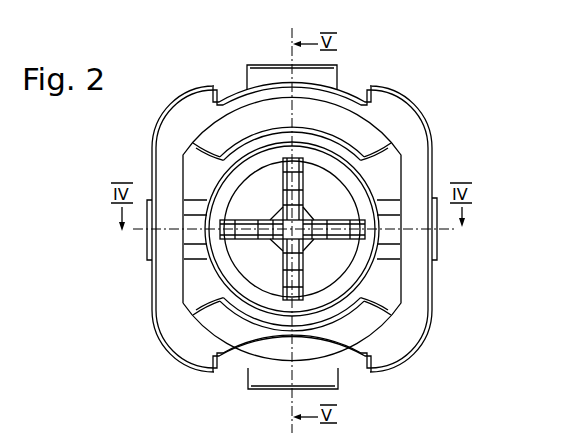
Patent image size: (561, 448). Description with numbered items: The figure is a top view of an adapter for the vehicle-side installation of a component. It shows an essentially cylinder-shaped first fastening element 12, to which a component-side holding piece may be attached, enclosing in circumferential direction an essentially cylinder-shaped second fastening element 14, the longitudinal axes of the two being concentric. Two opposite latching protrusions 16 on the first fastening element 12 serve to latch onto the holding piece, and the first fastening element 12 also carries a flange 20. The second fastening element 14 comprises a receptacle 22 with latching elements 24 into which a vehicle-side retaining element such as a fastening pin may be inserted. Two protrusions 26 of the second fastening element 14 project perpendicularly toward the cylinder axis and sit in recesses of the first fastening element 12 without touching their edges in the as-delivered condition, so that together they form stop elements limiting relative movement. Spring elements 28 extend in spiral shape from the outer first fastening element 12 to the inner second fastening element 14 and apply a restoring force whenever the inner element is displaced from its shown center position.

The first fastening element 12 is at (405, 127).
The second fastening element 14 is at (268, 243).
The latching protrusions 16 is at (337, 74).
The flange 20 is at (408, 335).
The receptacle 22 is at (327, 195).
The latching elements 24 is at (262, 280).
The protrusions 26 is at (147, 258).
The spring elements 28 is at (273, 124).